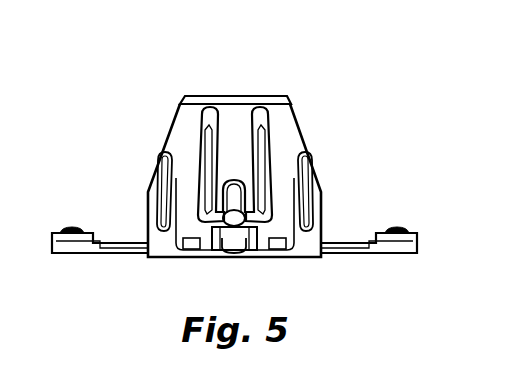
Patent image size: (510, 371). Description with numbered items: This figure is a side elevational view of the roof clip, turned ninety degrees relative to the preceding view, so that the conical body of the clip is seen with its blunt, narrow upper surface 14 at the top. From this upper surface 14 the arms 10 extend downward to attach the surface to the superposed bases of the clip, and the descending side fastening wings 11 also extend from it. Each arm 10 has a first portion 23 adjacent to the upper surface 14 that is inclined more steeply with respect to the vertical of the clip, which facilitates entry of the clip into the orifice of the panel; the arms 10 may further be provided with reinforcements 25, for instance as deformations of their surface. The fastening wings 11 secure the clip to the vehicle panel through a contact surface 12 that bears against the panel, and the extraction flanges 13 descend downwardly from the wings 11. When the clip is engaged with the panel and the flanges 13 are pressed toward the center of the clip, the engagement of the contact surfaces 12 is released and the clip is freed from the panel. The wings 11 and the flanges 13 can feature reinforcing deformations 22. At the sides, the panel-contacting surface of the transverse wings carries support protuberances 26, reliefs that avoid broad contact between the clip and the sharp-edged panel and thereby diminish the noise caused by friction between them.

The arms 10 is at (165, 132).
The fastening wings 11 is at (235, 140).
The contact surface 12 is at (260, 222).
The extraction flanges 13 is at (255, 250).
The upper surface 14 is at (232, 98).
The reinforcing deformations 22 is at (212, 217).
The first portion of the arm 23 is at (287, 130).
The reinforcements 25 is at (148, 208).
The support protuberances 26 is at (74, 228).